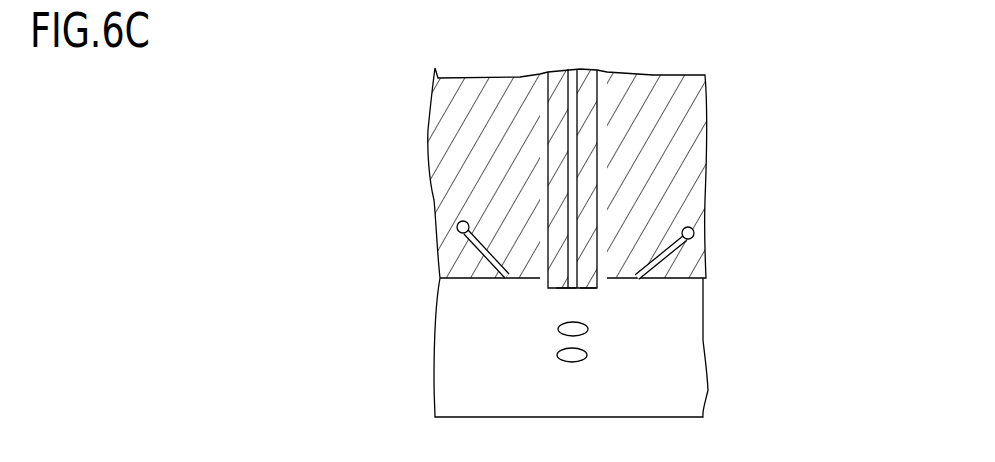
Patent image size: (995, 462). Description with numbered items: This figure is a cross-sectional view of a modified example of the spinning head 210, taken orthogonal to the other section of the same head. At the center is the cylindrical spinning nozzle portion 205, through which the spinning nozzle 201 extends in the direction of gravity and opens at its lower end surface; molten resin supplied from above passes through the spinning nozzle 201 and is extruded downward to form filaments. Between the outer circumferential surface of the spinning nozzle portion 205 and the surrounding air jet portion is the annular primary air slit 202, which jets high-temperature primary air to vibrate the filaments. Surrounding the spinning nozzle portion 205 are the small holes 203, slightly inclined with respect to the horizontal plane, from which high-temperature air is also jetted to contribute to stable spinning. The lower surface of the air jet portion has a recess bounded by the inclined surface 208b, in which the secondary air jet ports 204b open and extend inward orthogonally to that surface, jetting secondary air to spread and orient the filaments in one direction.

The spinning head 210 is at (408, 145).
The primary air slit 202 is at (617, 93).
The small holes 203 is at (673, 257).
The spinning nozzle portion 205 is at (600, 292).
The spinning nozzle 201 is at (567, 292).
The secondary air jet ports 204b is at (588, 330).
The inclined surface 208b is at (693, 398).